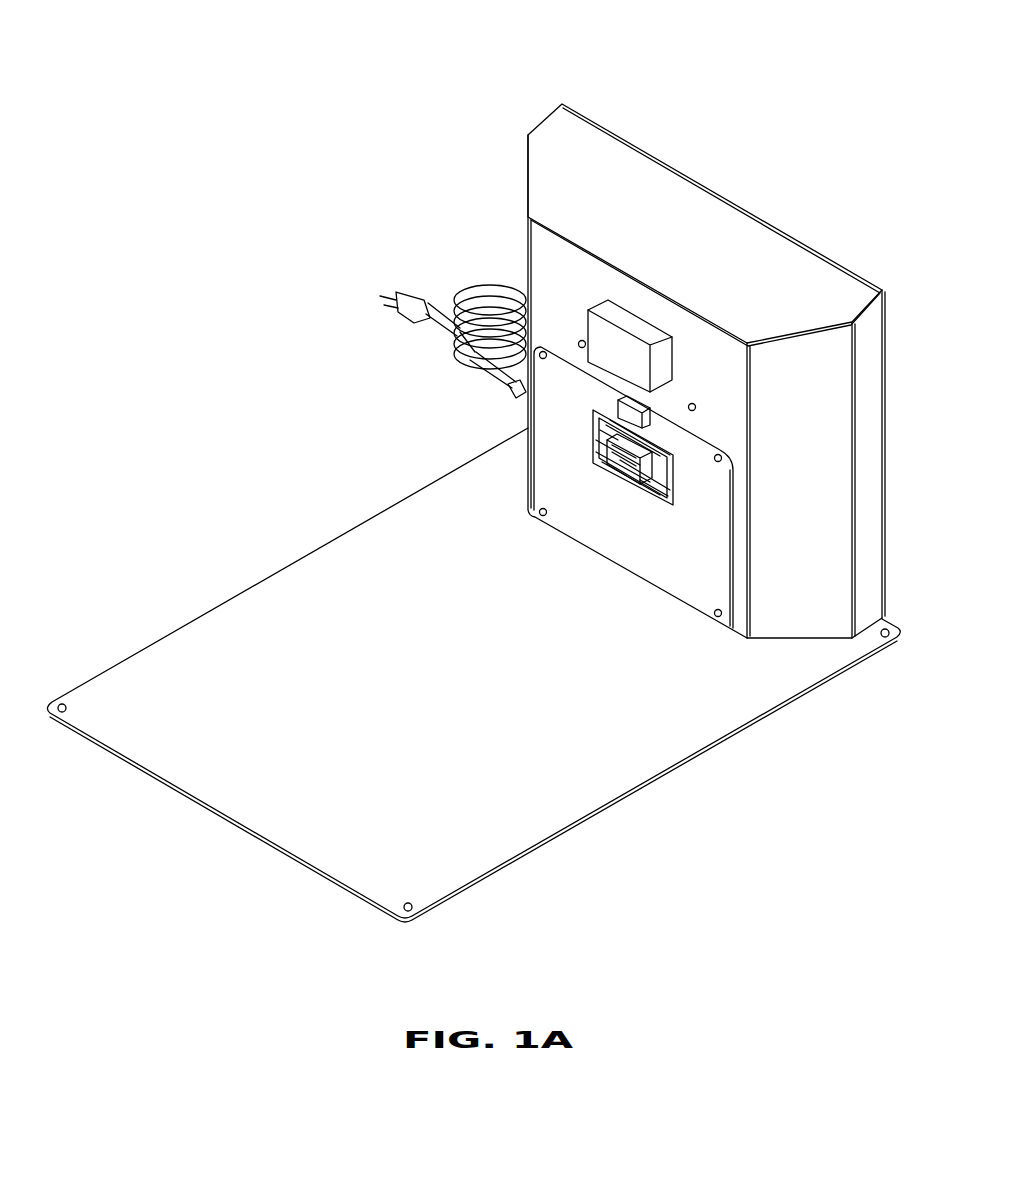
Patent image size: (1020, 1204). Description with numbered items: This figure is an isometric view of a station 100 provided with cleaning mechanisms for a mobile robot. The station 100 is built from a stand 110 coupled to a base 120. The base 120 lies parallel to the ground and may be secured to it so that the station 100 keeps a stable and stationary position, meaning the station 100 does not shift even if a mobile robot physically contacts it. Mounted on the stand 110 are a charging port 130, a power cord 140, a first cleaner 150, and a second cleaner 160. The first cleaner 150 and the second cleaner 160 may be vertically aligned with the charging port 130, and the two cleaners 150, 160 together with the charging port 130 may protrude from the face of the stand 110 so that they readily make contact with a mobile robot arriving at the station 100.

The station 100 is at (158, 294).
The stand 110 is at (611, 131).
The base 120 is at (731, 740).
The charging port 130 is at (622, 483).
The power cord 140 is at (466, 290).
The first cleaner 150 is at (618, 400).
The second cleaner 160 is at (642, 320).